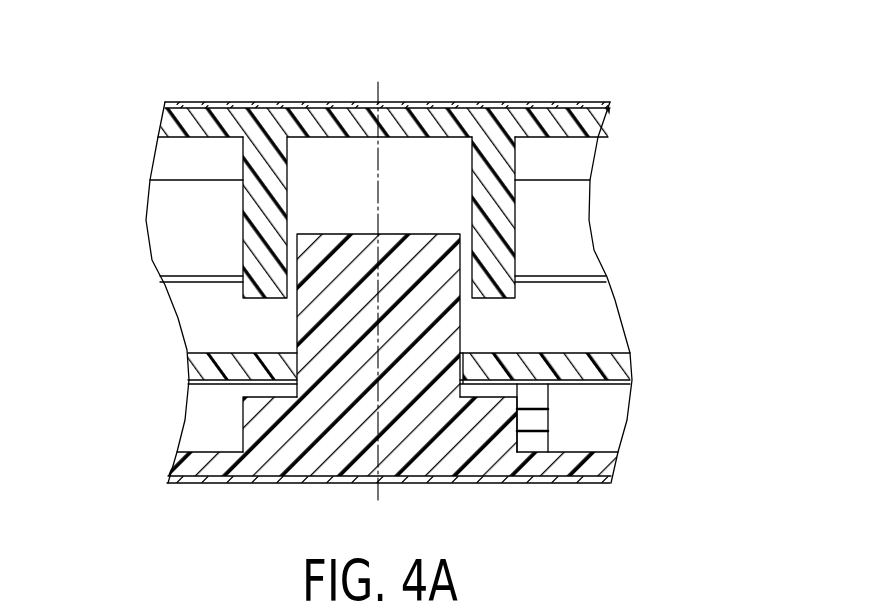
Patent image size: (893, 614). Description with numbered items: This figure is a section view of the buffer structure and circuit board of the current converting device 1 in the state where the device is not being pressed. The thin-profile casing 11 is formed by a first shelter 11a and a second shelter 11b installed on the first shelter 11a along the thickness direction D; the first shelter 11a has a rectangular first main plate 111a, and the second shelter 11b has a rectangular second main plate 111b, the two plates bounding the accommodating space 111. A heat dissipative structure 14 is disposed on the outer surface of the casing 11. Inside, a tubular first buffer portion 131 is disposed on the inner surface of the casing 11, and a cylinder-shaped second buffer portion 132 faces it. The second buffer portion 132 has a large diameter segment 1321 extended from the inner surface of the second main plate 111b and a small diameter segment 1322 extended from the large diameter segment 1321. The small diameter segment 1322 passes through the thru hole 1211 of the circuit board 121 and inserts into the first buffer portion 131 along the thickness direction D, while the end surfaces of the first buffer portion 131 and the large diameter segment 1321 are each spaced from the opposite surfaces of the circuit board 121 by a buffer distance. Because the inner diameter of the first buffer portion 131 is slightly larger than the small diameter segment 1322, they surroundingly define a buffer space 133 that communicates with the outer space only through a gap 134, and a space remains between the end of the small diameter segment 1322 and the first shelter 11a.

The current converting device 1 is at (177, 29).
The casing 11 is at (414, 291).
The first shelter 11a is at (460, 199).
The second shelter 11b is at (470, 358).
The accommodating space 111 is at (585, 302).
The first main plate 111a is at (590, 118).
The second main plate 111b is at (600, 466).
The heat dissipative structure 14 is at (564, 106).
The circuit board 121 is at (612, 368).
The thru hole 1211 is at (468, 367).
The first buffer portion 131 is at (263, 231).
The second buffer portion 132 is at (282, 343).
The large diameter segment 1321 is at (257, 413).
The small diameter segment 1322 is at (325, 336).
The buffer space 133 is at (322, 180).
The gap 134 is at (293, 260).
The thickness direction D is at (380, 96).